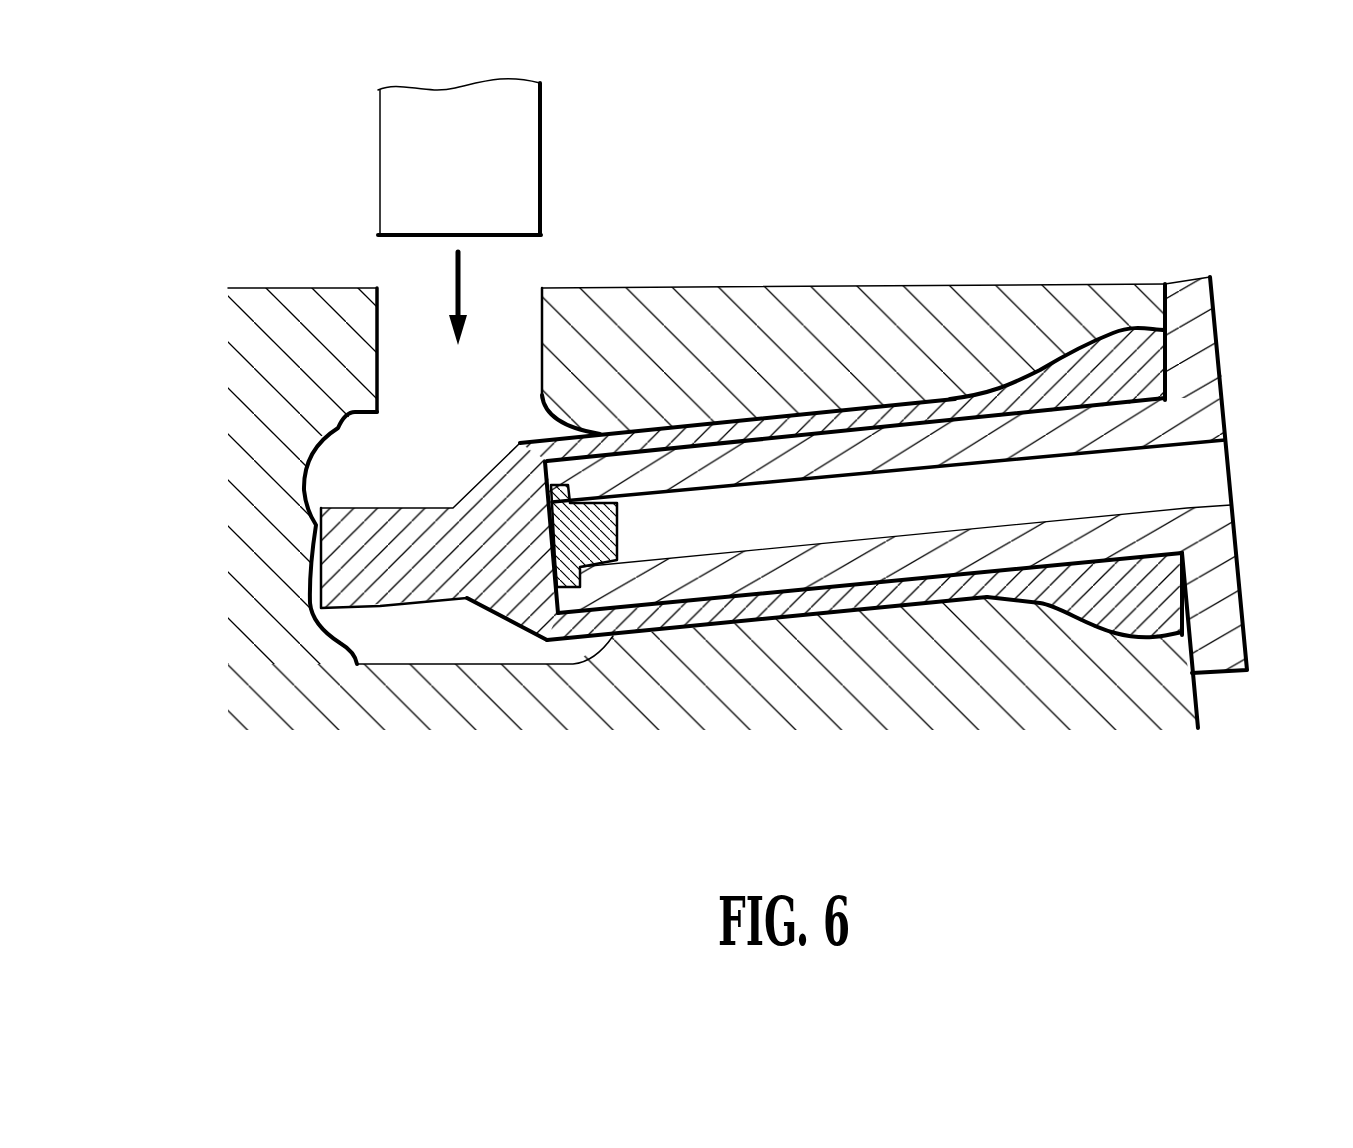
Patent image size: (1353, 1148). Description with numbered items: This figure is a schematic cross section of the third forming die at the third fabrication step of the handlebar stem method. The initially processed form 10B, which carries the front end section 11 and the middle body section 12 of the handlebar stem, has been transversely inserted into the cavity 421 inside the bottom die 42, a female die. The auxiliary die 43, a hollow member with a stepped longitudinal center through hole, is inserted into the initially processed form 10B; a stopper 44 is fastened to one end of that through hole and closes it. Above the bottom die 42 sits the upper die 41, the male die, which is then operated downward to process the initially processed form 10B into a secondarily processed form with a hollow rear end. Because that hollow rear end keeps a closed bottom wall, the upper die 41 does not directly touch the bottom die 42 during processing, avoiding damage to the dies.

The upper die 41 is at (528, 146).
The bottom die 42 is at (272, 310).
The cavity 421 is at (345, 462).
The auxiliary die 43 is at (1212, 400).
The stopper 44 is at (546, 527).
The initially processed form 10B is at (507, 597).
The middle body section 12 is at (848, 602).
The front end section 11 is at (1140, 625).